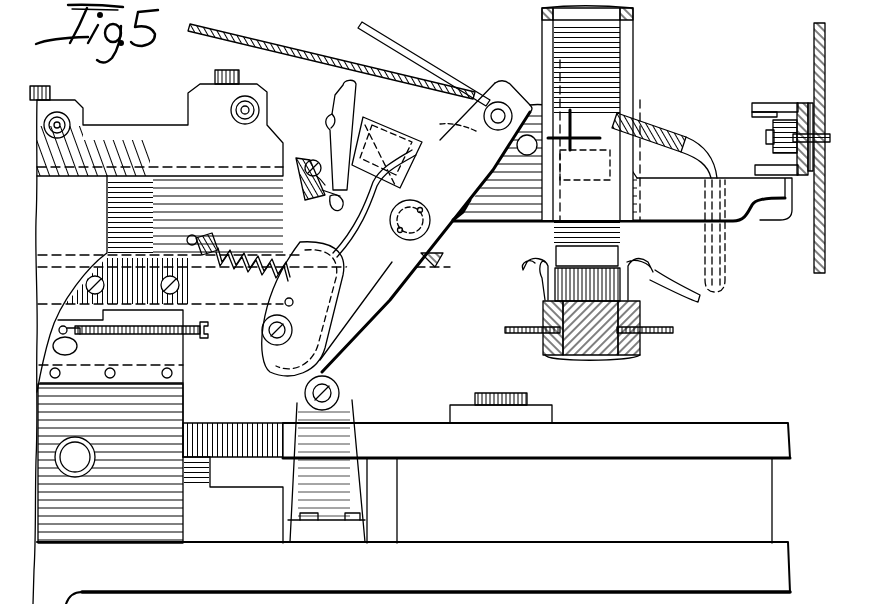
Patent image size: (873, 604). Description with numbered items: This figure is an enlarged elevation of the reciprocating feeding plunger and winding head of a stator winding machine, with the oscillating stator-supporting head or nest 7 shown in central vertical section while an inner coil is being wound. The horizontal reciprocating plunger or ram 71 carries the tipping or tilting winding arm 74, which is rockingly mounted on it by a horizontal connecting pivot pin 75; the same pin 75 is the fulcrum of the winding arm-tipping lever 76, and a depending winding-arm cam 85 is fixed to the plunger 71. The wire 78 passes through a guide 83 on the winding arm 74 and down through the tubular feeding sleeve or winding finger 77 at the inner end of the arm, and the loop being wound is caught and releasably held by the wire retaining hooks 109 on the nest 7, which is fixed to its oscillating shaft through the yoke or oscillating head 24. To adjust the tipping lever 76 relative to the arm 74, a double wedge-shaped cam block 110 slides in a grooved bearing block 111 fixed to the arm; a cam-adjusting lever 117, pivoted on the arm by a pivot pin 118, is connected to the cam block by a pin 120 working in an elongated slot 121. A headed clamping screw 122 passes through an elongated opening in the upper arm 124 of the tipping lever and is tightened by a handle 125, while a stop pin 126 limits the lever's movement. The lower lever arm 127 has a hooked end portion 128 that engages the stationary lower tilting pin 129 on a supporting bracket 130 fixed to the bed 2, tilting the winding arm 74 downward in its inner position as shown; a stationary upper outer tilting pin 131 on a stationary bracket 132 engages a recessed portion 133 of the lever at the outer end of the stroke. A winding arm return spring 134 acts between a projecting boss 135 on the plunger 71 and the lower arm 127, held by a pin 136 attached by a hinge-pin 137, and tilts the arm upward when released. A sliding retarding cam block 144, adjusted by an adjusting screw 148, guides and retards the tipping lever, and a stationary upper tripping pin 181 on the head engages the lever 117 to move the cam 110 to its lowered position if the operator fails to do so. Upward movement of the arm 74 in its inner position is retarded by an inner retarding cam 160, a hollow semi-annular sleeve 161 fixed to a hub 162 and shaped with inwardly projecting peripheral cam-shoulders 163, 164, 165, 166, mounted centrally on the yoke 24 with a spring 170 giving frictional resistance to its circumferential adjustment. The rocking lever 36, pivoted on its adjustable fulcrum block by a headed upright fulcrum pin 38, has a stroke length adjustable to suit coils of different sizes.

The bed or table 2 is at (648, 553).
The oscillating stator-supporting head or nest 7 is at (580, 364).
The yoke or oscillating head 24 is at (814, 35).
The rocking lever 36 is at (612, 432).
The headed upright fulcrum pin 38 is at (515, 392).
The reciprocating plunger or ram 71 is at (137, 185).
The tipping or tilting winding arm 74 is at (506, 222).
The connecting pivot pin 75 is at (425, 228).
The winding arm-tipping or tilting lever 76 is at (352, 312).
The tubular feeding sleeve or winding finger 77 is at (722, 263).
The wire 78 is at (685, 130).
The guide 83 is at (468, 88).
The reciprocating winding-arm cam 85 is at (38, 510).
The wire retaining hooks 109 is at (525, 264).
The double wedge-shaped cam block 110 is at (378, 192).
The grooved bearing block 111 is at (376, 120).
The cam-adjusting winding-arm actuating or tilting lever 117 is at (343, 85).
The pivot pin 118 is at (310, 160).
The pin 120 is at (328, 208).
The elongated slot 121 is at (325, 198).
The headed clamping screw 122 is at (490, 128).
The upper arm of the tipping lever 124 is at (498, 102).
The handle 125 is at (390, 40).
The stop pin 126 is at (545, 152).
The lower lever arm of the tipping lever 127 is at (292, 392).
The recessed or hooked end portion 128 is at (300, 388).
The stationary lower tilting pin 129 is at (339, 391).
The supporting bracket 130 is at (340, 465).
The stationary upper outer tilting pin 131 is at (245, 110).
The stationary supporting frame portion or bracket 132 is at (200, 93).
The recessed portion 133 is at (330, 112).
The winding arm return spring 134 is at (214, 240).
The projecting boss 135 is at (195, 235).
The pin 136 is at (255, 262).
The hinge-pin 137 is at (293, 302).
The sliding cam block 144 is at (95, 335).
The adjusting screw 148 is at (200, 330).
The inner retarding cam 160 is at (803, 100).
The hollow semi-annular sleeve 161 is at (773, 128).
The hub 162 is at (790, 103).
The peripheral cam-shoulder 163 is at (788, 215).
The peripheral cam-shoulder 164 is at (760, 165).
The peripheral cam-shoulder 165 is at (775, 100).
The peripheral cam-shoulder 166 is at (766, 132).
The spring 170 is at (810, 95).
The stationary upper tripping pin 181 is at (60, 125).